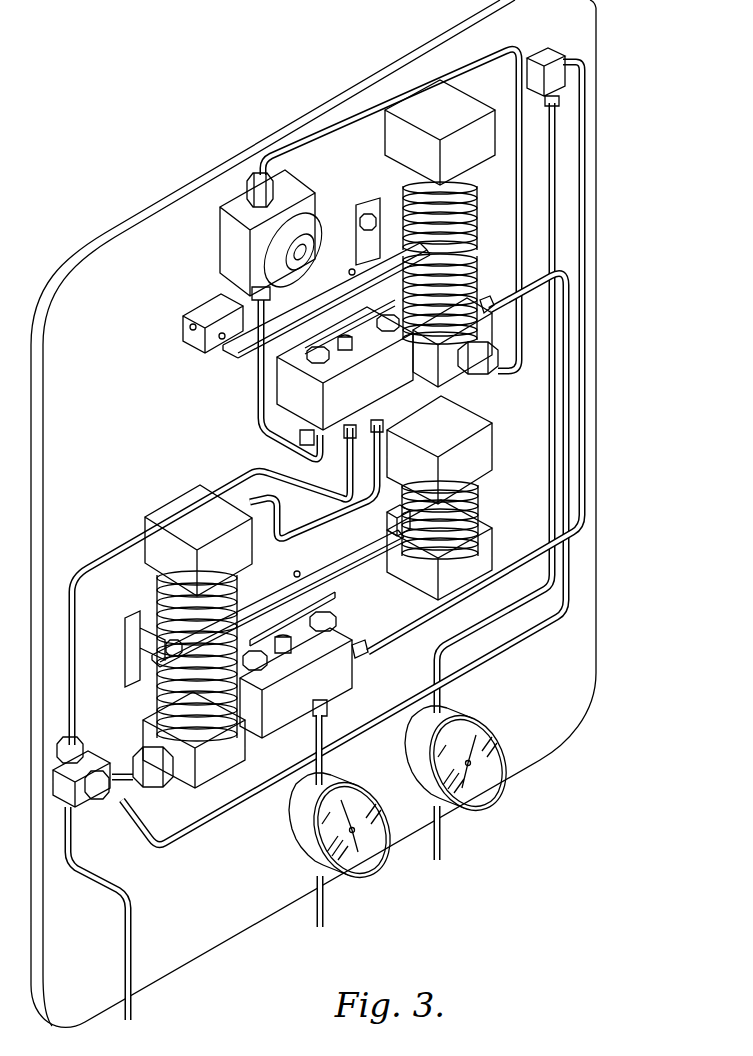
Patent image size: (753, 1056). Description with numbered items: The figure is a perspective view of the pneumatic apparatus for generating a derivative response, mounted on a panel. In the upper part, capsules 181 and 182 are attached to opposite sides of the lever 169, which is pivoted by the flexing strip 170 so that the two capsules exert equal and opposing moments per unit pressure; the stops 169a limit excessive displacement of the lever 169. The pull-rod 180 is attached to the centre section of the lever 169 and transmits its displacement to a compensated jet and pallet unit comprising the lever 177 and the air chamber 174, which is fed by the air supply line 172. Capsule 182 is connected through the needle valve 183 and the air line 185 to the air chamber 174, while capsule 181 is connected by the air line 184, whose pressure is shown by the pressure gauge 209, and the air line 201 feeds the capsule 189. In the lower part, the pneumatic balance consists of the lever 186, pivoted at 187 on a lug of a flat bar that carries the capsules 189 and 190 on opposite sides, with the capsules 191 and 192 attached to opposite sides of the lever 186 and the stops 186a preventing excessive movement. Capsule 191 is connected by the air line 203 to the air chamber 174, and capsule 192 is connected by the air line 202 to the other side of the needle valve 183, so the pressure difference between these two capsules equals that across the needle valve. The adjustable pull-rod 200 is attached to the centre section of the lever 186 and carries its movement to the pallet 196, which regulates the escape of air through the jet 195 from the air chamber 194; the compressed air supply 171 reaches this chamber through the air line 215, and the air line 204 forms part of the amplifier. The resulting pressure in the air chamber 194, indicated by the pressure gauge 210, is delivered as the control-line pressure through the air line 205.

The lever 169 is at (262, 340).
The stops 169a is at (390, 240).
The flexing strip 170 is at (222, 348).
The compressed air supply 171 is at (122, 1008).
The air supply line 172 is at (133, 547).
The air chamber 174 is at (378, 391).
The lever 177 is at (283, 333).
The pull-rod 180 is at (352, 269).
The capsule 181 is at (465, 191).
The capsule 182 is at (463, 268).
The needle valve 183 is at (237, 245).
The air line 184 is at (480, 626).
The air line 185 is at (258, 405).
The lever 186 is at (368, 548).
The stops 186a is at (123, 667).
The pivot 187 is at (398, 518).
The capsule 189 is at (458, 513).
The capsule 190 is at (440, 533).
The capsule 191 is at (160, 593).
The capsule 192 is at (160, 708).
The air chamber 194 is at (318, 694).
The jet 195 is at (336, 620).
The pallet 196 is at (330, 605).
The adjustable pull-rod 200 is at (295, 573).
The air line 201 is at (532, 397).
The air line 202 is at (505, 650).
The air line 203 is at (283, 522).
The air line 204 is at (380, 635).
The air line 205 is at (325, 900).
The pressure gauge 209 is at (488, 752).
The pressure gauge 210 is at (360, 786).
The air line 215 is at (118, 805).